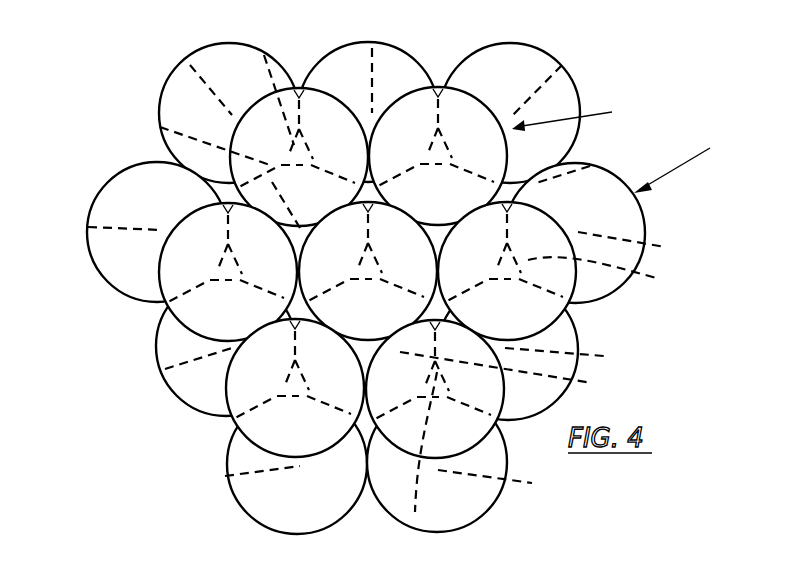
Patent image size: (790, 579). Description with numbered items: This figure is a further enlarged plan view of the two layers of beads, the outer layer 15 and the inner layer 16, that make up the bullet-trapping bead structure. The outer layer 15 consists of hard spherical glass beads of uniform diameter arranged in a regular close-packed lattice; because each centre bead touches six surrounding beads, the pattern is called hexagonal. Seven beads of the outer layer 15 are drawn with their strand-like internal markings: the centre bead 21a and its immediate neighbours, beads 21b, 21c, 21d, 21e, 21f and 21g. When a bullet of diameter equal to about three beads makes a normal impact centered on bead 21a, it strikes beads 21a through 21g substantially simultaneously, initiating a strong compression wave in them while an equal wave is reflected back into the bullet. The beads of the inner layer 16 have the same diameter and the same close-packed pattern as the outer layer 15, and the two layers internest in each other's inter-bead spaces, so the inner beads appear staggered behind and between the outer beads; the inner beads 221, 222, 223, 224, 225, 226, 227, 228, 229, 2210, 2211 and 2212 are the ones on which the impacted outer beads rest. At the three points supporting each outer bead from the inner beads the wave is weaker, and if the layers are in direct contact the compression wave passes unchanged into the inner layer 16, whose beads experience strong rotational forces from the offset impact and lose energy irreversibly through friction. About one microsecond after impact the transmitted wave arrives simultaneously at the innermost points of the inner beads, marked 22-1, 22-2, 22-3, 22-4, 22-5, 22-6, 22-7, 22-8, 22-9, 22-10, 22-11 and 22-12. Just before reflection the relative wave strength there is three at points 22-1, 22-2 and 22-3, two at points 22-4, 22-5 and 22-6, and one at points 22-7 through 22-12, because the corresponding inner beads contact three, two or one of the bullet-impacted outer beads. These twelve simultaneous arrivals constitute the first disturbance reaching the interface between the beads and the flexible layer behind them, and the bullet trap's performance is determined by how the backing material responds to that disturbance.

The outer layer 15 is at (573, 117).
The inner layer 16 is at (685, 166).
The bead 21a is at (425, 237).
The bead 21b is at (495, 417).
The bead 21c is at (568, 305).
The bead 21d is at (441, 86).
The bead 21e is at (300, 86).
The bead 21f is at (167, 301).
The bead 21g is at (233, 418).
The innermost point 22-1 is at (516, 432).
The innermost point 22-2 is at (593, 163).
The innermost point 22-3 is at (160, 127).
The innermost point 22-4 is at (573, 357).
The innermost point 22-5 is at (382, 60).
The innermost point 22-6 is at (163, 371).
The innermost point 22-7 is at (505, 482).
The innermost point 22-8 is at (642, 245).
The innermost point 22-9 is at (565, 66).
The innermost point 22-10 is at (188, 62).
The innermost point 22-11 is at (84, 226).
The innermost point 22-12 is at (223, 476).
The outer wire position 221 is at (421, 528).
The outer wire position 222 is at (634, 278).
The outer wire position 223 is at (272, 50).
The outer wire position 224 is at (577, 345).
The outer wire position 225 is at (407, 50).
The outer wire position 226 is at (176, 396).
The outer wire position 227 is at (498, 497).
The outer wire position 228 is at (644, 223).
The outer wire position 229 is at (580, 97).
The outer wire position 2210 is at (167, 78).
The outer wire position 2211 is at (122, 170).
The outer wire position 2212 is at (242, 508).